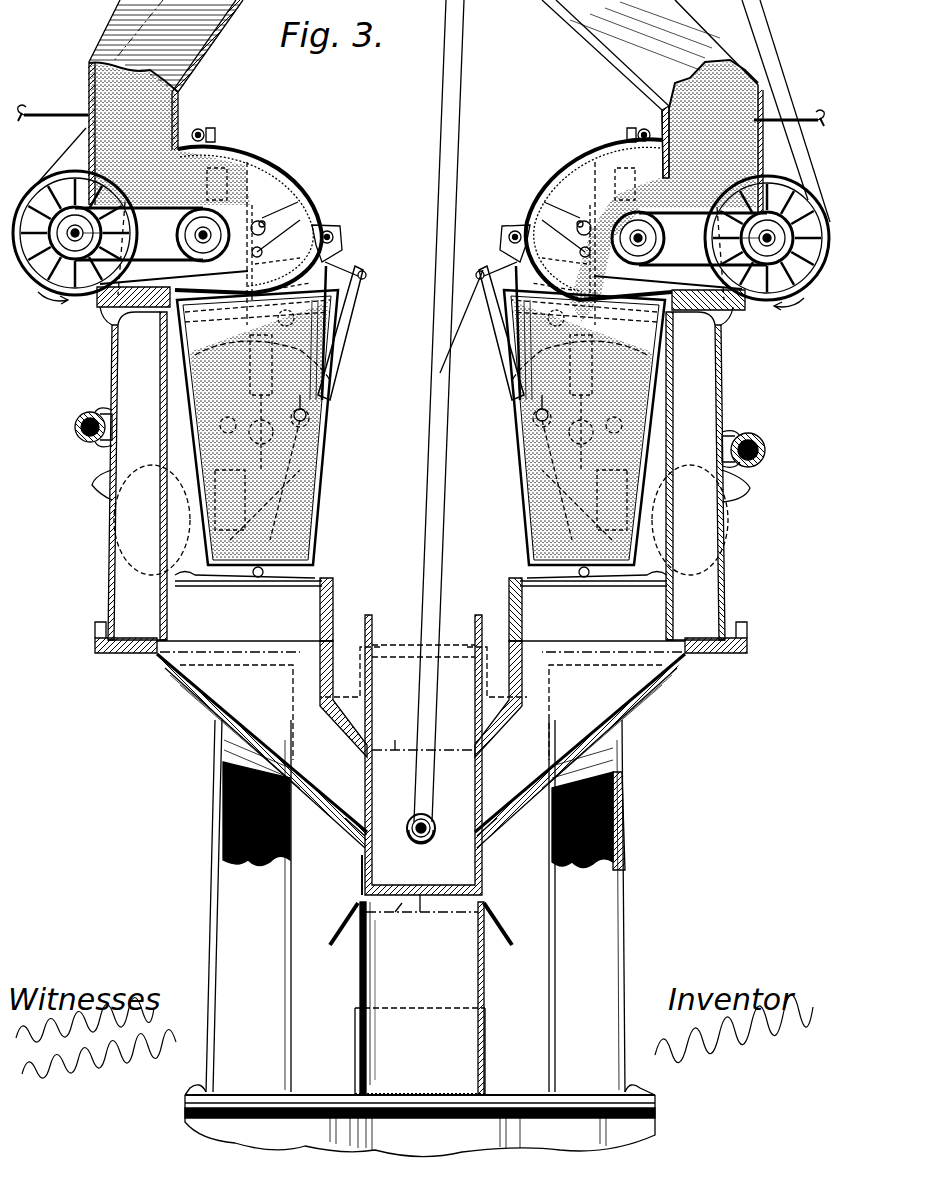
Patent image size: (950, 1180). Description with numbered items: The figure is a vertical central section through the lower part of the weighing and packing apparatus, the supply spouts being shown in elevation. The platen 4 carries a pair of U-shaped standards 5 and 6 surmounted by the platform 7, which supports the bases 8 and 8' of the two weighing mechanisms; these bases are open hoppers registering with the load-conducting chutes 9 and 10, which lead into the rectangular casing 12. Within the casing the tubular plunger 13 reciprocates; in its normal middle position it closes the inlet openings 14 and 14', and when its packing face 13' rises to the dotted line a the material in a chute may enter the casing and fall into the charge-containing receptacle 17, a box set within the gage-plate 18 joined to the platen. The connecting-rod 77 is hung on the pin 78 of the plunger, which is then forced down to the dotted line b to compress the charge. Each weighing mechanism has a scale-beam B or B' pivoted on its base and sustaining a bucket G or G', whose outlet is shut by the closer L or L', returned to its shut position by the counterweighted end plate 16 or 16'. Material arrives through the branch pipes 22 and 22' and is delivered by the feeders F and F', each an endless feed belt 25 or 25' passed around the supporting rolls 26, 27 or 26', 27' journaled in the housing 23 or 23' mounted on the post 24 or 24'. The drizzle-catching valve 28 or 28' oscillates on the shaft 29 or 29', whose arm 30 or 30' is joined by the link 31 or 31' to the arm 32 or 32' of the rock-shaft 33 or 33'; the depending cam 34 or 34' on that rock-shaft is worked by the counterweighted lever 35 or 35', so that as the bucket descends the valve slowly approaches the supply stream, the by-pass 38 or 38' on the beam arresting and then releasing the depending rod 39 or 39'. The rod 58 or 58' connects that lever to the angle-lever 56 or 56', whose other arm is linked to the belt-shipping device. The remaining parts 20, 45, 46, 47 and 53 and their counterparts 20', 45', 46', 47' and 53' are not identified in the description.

The branch pipe 22 is at (169, 102).
The hooked arm 47 is at (53, 105).
The connecting rod 46 is at (56, 159).
The pivot screw 53 is at (205, 116).
The angle-lever 56 is at (226, 220).
The housing 23 is at (209, 219).
The rod 58 is at (272, 190).
The shaft 29 is at (285, 230).
The drizzle-catching valve 28 is at (301, 220).
The rock-shaft 33 is at (345, 227).
The arm 32 is at (342, 243).
The cam 34 is at (357, 265).
The lever arm 20 is at (355, 333).
The feed belt 25 is at (87, 233).
The supporting roll 27 is at (104, 248).
The supporting roll 26 is at (191, 247).
The feeder F is at (161, 246).
The drive wheel 45 is at (75, 252).
The arm 30 is at (275, 233).
The link 31 is at (282, 274).
The counterweighted lever 35 is at (282, 324).
The depending rod 39 is at (345, 350).
The by-pass 38 is at (332, 406).
The post 24 is at (123, 473).
The scale-beam B is at (78, 454).
The load-receiver G is at (262, 427).
The end plate 16 is at (152, 520).
The closer L is at (248, 584).
The base 8 is at (337, 607).
The platform 7 is at (735, 654).
The load-conducting chute 9 is at (208, 712).
The U-shaped standard 5 is at (238, 907).
The plunger 13 is at (423, 755).
The dotted line a is at (423, 735).
The connecting-rod 77 is at (440, 500).
The pin 78 is at (432, 818).
The inlet opening 14 is at (341, 832).
The casing 12 is at (362, 867).
The packing face 13' is at (421, 995).
The dotted line b is at (392, 919).
The charge-containing receptacle 17 is at (420, 986).
The gage-plate 18 is at (482, 1052).
The platen 4 is at (296, 1097).
The branch pipe 22' is at (652, 161).
The hooked arm 47' is at (783, 100).
The connecting rod 46' is at (792, 111).
The drive wheel 45' is at (767, 246).
The feed belt 25' is at (750, 238).
The supporting roll 27' is at (733, 253).
The supporting roll 26' is at (653, 249).
The feeder F' is at (680, 251).
The housing 23' is at (635, 224).
The pivot screw 53' is at (620, 119).
The angle-lever 56' is at (606, 220).
The rod 58' is at (576, 190).
The arm 30' is at (564, 233).
The shaft 29' is at (551, 235).
The drizzle-catching valve 28' is at (542, 223).
The link 31' is at (559, 274).
The rock-shaft 33' is at (495, 226).
The arm 32' is at (499, 243).
The cam 34' is at (510, 286).
The lever arm 20' is at (495, 333).
The counterweighted lever 35' is at (584, 317).
The depending rod 39' is at (486, 335).
The by-pass 38' is at (508, 408).
The post 24' is at (715, 473).
The scale-beam B' is at (743, 455).
The load-receiver G' is at (573, 427).
The end plate 16' is at (690, 520).
The closer L' is at (593, 585).
The base 8' is at (499, 609).
The load-conducting chute 10 is at (645, 700).
The inlet opening 14' is at (505, 827).
The U-shaped standard 6 is at (602, 907).